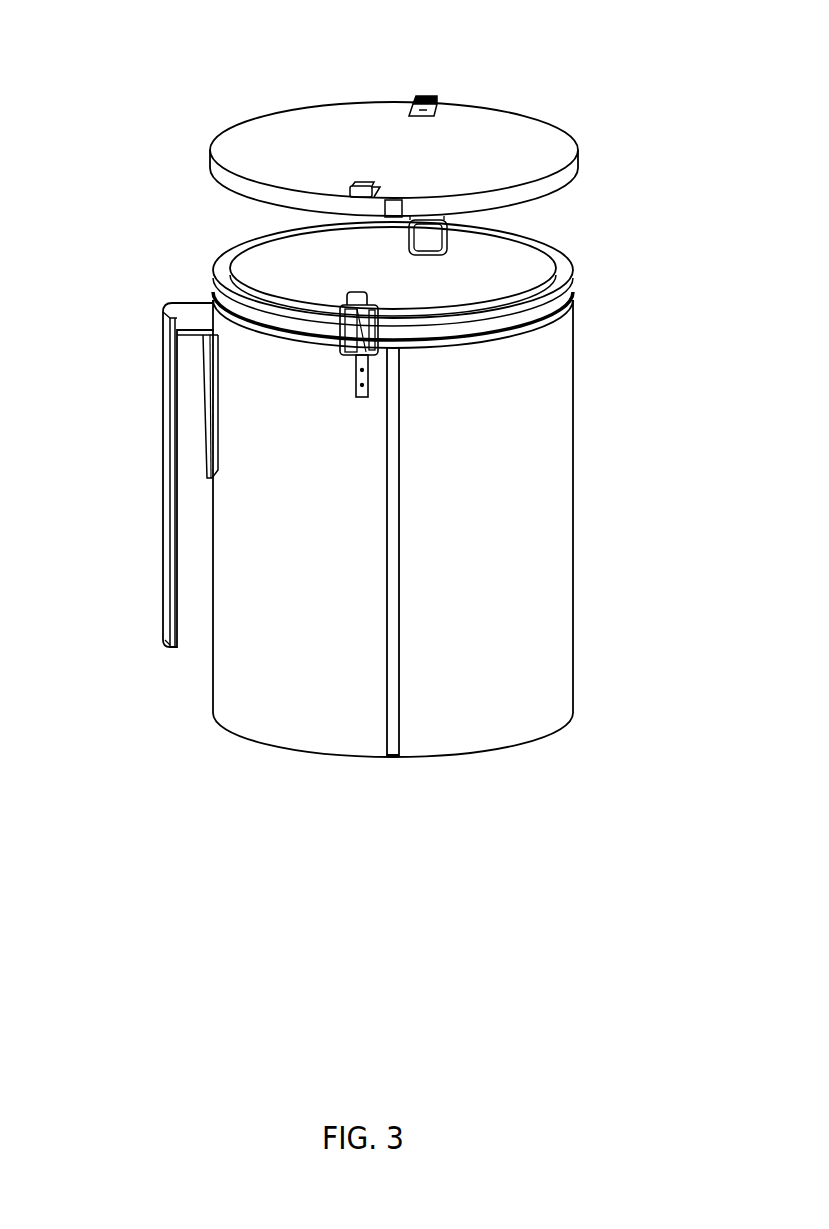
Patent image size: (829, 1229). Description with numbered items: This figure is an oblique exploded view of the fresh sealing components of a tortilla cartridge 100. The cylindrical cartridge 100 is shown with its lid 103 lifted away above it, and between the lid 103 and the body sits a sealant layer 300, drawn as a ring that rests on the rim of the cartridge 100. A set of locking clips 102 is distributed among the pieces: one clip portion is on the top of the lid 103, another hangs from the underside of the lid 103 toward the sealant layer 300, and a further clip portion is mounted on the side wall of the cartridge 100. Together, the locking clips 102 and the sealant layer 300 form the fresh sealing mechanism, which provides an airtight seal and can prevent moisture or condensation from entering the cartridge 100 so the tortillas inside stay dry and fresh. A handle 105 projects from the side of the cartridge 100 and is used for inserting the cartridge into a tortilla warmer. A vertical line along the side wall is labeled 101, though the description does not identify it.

The cartridge 100 is at (587, 483).
The seam 101 is at (401, 692).
The locking clips 102 is at (426, 87).
The lid 103 is at (586, 139).
The handle 105 is at (168, 450).
The sealant layer 300 is at (586, 256).